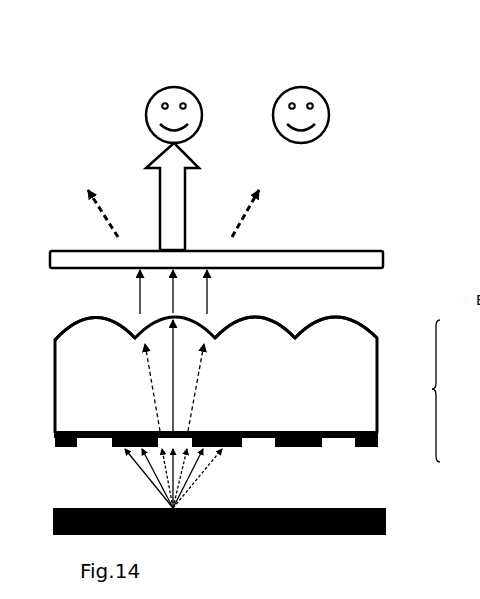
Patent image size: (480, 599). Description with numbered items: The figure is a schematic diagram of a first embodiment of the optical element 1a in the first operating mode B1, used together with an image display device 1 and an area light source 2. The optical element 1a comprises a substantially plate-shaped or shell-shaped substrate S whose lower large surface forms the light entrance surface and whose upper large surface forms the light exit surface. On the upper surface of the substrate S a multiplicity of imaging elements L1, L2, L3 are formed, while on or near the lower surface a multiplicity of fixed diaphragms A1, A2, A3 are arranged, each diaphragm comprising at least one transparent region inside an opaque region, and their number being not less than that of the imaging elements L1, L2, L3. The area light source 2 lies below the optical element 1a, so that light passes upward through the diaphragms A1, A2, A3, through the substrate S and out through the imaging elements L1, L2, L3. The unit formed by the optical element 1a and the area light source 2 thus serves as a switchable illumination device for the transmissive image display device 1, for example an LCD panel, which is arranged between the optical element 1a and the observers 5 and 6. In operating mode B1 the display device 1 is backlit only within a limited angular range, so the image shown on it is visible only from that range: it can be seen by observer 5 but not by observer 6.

The image display device 1 is at (292, 257).
The optical element 1a is at (451, 391).
The area light source 2 is at (235, 492).
The observer 5 is at (174, 100).
The observer 6 is at (301, 100).
The first operating mode B1 is at (173, 137).
The substrate S is at (216, 377).
The imaging element L1 is at (138, 333).
The imaging element L2 is at (273, 318).
The imaging element L3 is at (345, 317).
The diaphragm A1 is at (200, 447).
The diaphragm A2 is at (255, 448).
The diaphragm A3 is at (337, 448).